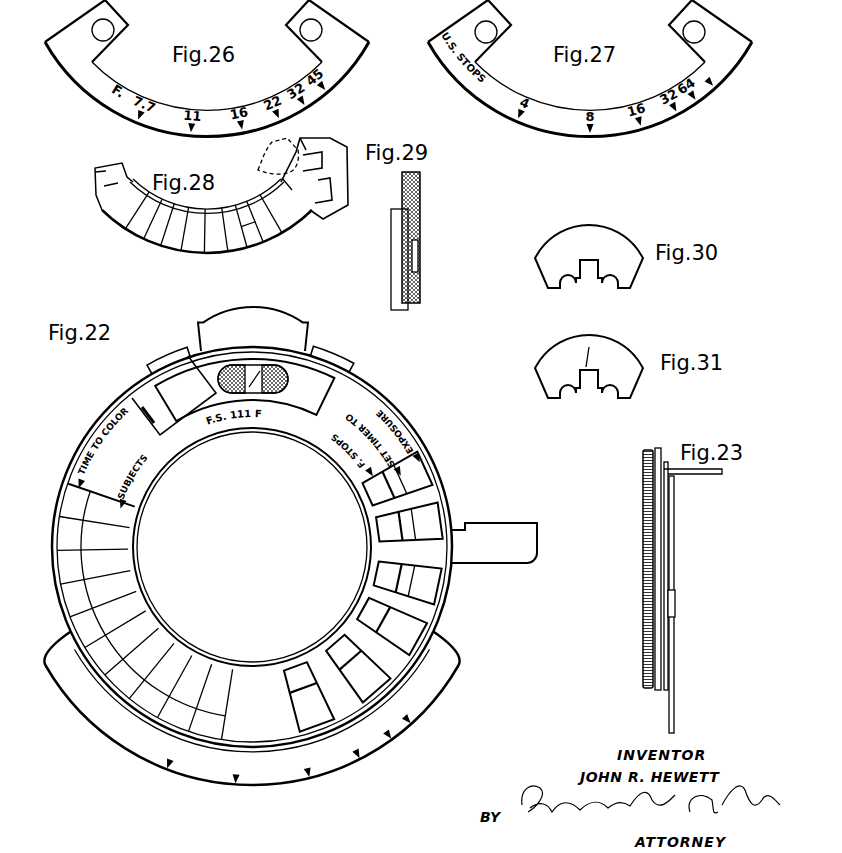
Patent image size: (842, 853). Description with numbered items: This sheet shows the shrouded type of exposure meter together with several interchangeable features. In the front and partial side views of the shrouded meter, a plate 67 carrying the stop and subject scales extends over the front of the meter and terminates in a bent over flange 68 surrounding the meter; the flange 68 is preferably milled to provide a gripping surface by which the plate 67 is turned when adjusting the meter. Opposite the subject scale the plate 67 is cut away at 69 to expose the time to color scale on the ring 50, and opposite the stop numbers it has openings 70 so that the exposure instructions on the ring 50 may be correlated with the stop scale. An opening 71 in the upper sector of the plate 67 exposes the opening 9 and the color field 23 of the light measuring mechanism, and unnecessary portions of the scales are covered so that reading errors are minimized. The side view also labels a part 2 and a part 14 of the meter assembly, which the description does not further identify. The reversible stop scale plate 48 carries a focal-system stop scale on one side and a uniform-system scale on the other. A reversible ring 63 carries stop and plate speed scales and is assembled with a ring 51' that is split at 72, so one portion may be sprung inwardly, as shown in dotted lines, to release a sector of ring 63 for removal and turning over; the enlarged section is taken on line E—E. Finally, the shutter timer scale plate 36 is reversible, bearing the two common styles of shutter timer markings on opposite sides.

In FIG. 23, the dial plate 2 is at (668, 546).
In FIG. 22, the opening 9 is at (276, 360).
In FIG. 22, the handle bracket 14 is at (511, 543).
In FIG. 23, the handle bracket 14 is at (708, 478).
In FIG. 22, the color field 23 is at (250, 378).
In FIG. 30, the shutter timer scale plate 36 is at (548, 281).
In FIG. 31, the shutter timer scale plate 36 is at (555, 333).
In FIG. 22, the shutter timer scale plate 36 is at (235, 329).
In FIG. 27, the stop scale plate 48 is at (440, 50).
In FIG. 22, the stop scale plate 48 is at (255, 708).
In FIG. 23, the stop scale plate 48 is at (676, 712).
In FIG. 28, the ring 50 is at (320, 212).
In FIG. 29, the ring 50 is at (410, 278).
In FIG. 22, the ring 50 is at (132, 395).
In FIG. 23, the ring 50 is at (655, 562).
In FIG. 29, the ring 51' is at (430, 236).
In FIG. 29, the ring 63 is at (421, 230).
In FIG. 22, the plate 67 is at (267, 662).
In FIG. 22, the bent over flange 68 is at (126, 612).
In FIG. 23, the bent over flange 68 is at (650, 688).
In FIG. 22, the cut away 69 is at (123, 610).
In FIG. 22, the openings 70 is at (388, 592).
In FIG. 22, the opening 71 is at (171, 391).
In FIG. 28, the split 72 is at (284, 180).
In FIG. 28, the section line E— E is at (336, 194).